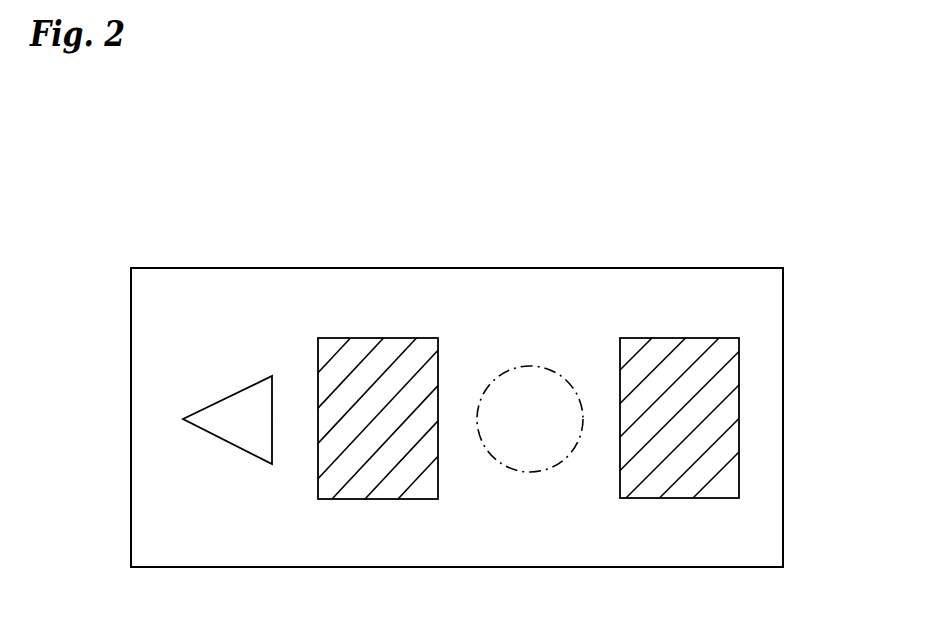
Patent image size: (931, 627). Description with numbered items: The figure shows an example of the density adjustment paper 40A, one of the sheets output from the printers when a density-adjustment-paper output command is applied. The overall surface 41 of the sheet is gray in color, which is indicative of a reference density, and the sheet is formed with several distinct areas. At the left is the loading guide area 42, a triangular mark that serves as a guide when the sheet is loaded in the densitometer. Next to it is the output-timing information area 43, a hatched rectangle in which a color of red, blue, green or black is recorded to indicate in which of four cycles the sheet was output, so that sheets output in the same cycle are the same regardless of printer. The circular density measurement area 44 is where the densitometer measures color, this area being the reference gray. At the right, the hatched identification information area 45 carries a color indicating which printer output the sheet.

The density adjustment paper 40A is at (784, 313).
The overall surface 41 is at (688, 532).
The loading guide area 42 is at (233, 393).
The output-timing information area 43 is at (385, 338).
The density measurement area 44 is at (522, 366).
The identification information area 45 is at (699, 338).